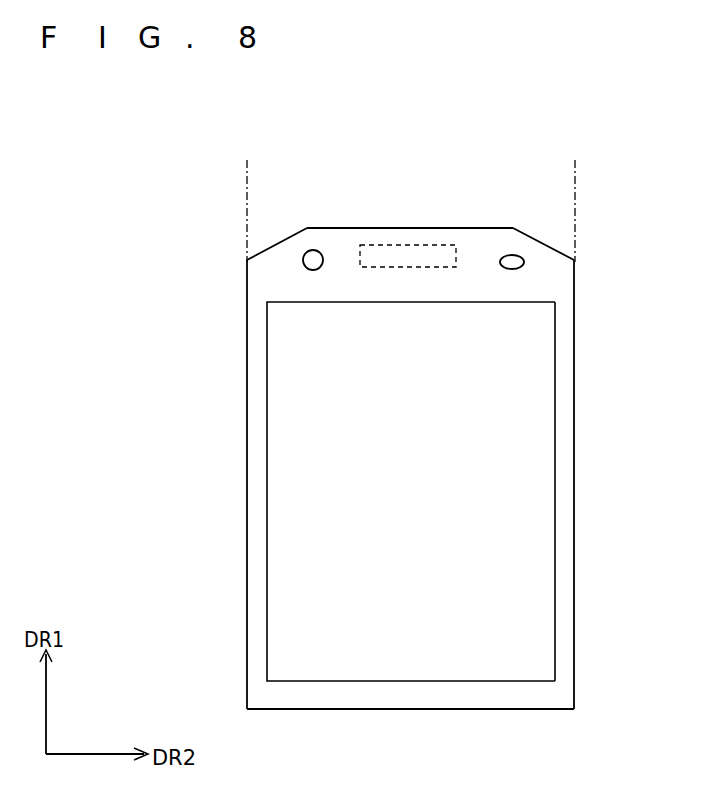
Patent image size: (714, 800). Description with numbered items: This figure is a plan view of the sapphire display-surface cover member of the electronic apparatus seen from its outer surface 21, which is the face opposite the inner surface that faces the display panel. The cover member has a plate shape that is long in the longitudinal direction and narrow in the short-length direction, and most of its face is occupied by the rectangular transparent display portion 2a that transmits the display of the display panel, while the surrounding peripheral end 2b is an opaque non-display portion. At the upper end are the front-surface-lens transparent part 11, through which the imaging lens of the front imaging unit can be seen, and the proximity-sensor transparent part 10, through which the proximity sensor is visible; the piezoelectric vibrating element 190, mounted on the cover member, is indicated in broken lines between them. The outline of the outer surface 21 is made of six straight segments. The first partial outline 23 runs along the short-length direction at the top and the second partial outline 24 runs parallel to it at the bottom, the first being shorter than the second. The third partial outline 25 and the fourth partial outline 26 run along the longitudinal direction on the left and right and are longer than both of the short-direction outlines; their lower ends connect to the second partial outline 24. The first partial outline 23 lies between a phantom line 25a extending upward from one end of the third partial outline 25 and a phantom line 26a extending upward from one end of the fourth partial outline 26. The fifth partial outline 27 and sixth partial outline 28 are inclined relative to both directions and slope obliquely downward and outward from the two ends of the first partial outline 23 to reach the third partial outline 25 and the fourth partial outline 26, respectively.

The display portion 2a is at (543, 457).
The peripheral end 2b is at (563, 558).
The proximity-sensor transparent part 10 is at (512, 255).
The front-surface-lens transparent part 11 is at (314, 250).
The outer surface 21 is at (543, 412).
The first partial outline 23 is at (358, 227).
The second partial outline 24 is at (410, 710).
The third partial outline 25 is at (247, 497).
The phantom line 25a is at (247, 213).
The fourth partial outline 26 is at (575, 505).
The phantom line 26a is at (575, 215).
The fifth partial outline 27 is at (268, 249).
The sixth partial outline 28 is at (545, 244).
The piezoelectric vibrating element 190 is at (403, 244).